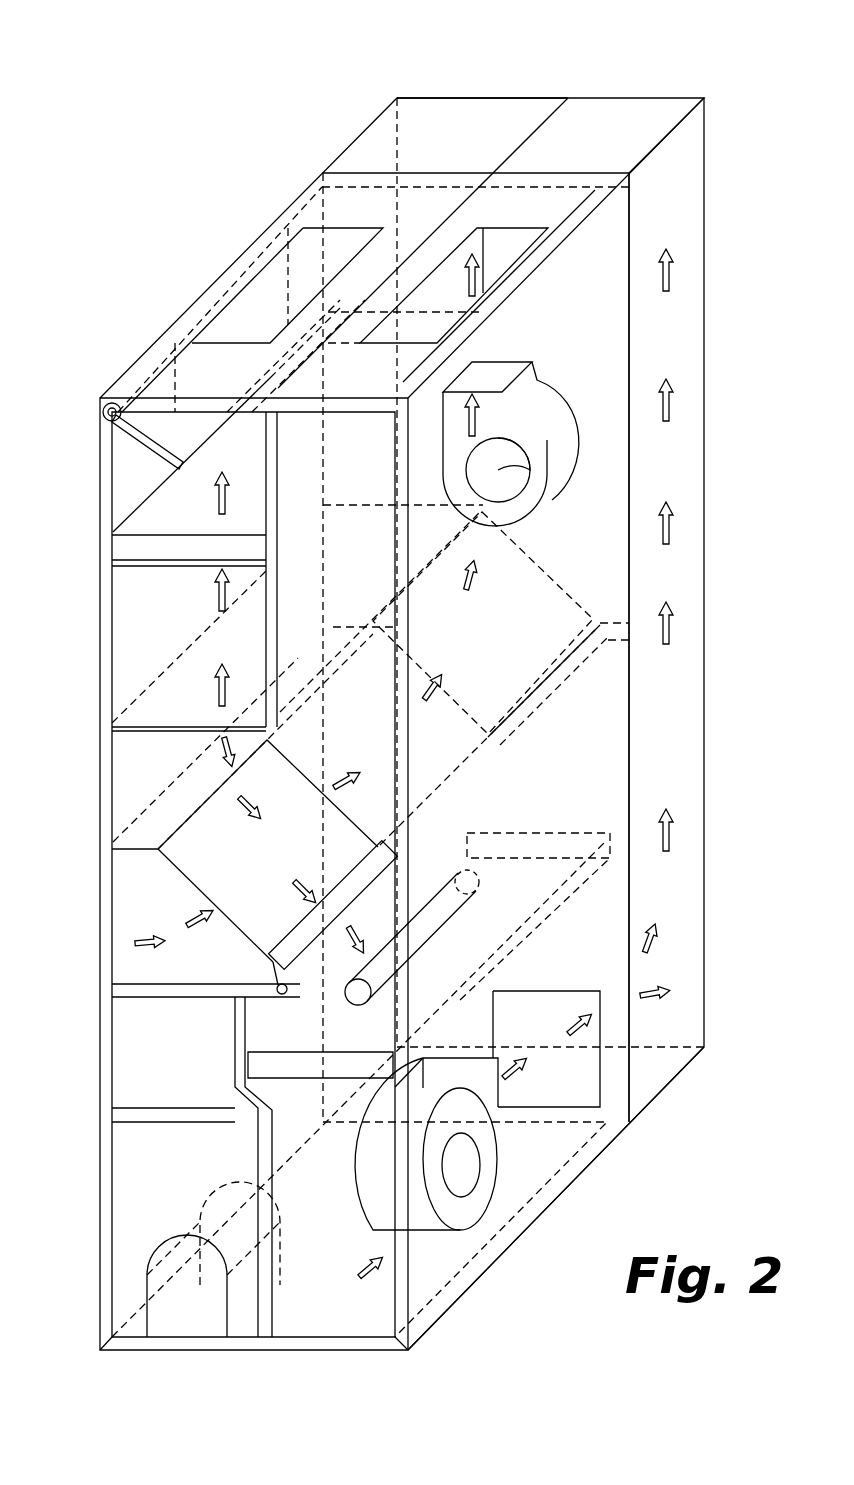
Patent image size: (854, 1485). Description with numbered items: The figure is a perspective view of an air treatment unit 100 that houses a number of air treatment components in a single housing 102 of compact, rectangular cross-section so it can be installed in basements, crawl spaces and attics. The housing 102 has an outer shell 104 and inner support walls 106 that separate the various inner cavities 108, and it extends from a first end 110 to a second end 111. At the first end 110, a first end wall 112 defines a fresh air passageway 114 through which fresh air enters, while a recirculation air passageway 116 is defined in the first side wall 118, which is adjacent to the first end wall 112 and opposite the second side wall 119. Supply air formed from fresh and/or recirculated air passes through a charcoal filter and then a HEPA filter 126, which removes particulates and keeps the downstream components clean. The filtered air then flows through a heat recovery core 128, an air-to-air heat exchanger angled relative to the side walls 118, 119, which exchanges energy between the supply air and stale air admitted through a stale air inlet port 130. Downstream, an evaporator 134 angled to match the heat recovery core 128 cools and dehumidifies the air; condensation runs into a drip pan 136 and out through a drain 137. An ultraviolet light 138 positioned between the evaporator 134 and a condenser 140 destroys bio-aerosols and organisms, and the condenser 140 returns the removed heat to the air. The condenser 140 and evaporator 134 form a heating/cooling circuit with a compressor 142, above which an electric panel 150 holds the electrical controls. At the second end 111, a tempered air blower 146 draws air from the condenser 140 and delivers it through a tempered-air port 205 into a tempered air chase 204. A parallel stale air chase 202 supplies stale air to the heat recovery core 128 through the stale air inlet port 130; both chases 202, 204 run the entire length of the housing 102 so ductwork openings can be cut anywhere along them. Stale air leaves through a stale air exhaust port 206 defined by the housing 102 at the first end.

The air treatment unit 100 is at (606, 74).
The housing 102 is at (105, 592).
The outer shell 104 is at (118, 400).
The inner support walls 106 is at (270, 500).
The inner cavities 108 is at (207, 445).
The first end 110 is at (247, 222).
The second end 111 is at (560, 1198).
The first end wall 112 is at (370, 175).
The fresh air passageway 114 is at (312, 248).
The recirculation air passageway 116 is at (186, 292).
The first side wall 118 is at (100, 715).
The second side wall 119 is at (603, 343).
The HEPA filter 126 is at (140, 632).
The heat recovery core 128 is at (337, 833).
The stale air inlet port 130 is at (168, 875).
The evaporator 134 is at (282, 956).
The drip pan 136 is at (275, 1000).
The drain 137 is at (276, 988).
The ultraviolet (UV) light 138 is at (430, 920).
The condenser 140 is at (250, 1100).
The compressor 142 is at (165, 1262).
The tempered air blower 146 is at (487, 1173).
The electric panel 150 is at (128, 1073).
The stale air chase 202 is at (420, 97).
The tempered air chase 204 is at (668, 100).
The tempered-air port 205 is at (605, 1010).
The stale air exhaust port 206 is at (515, 240).